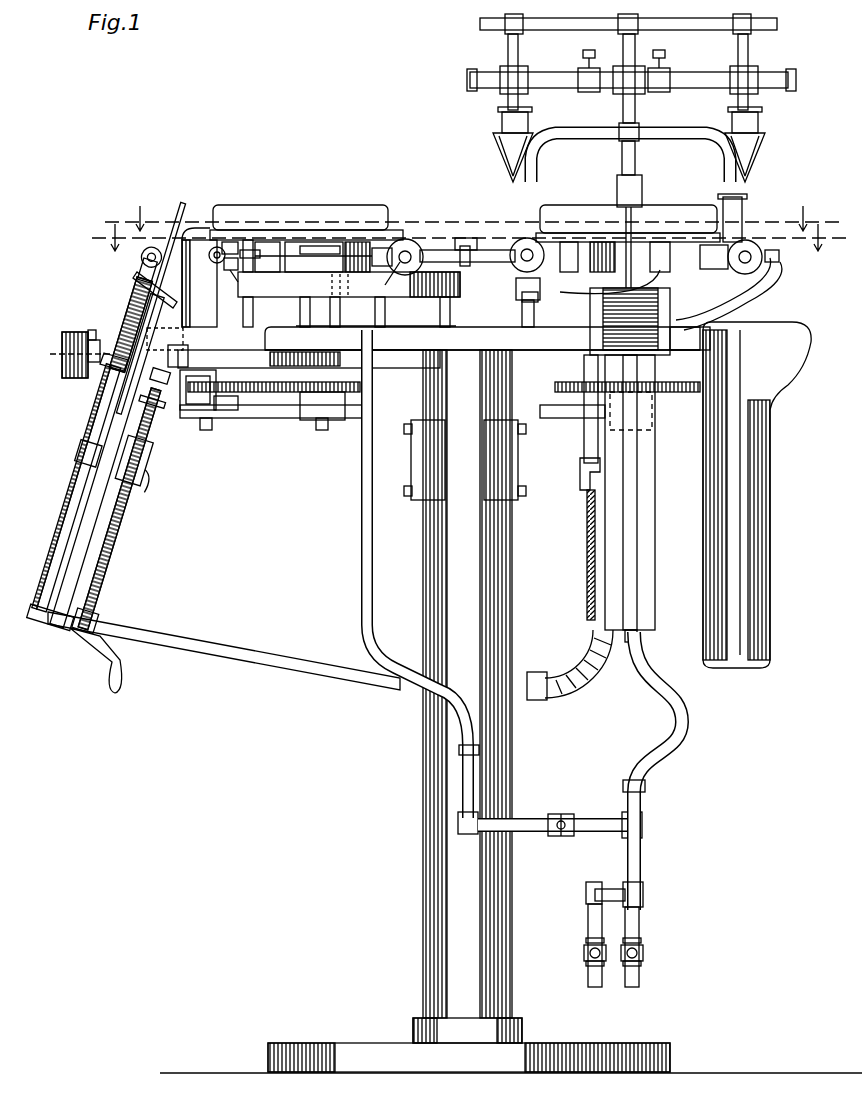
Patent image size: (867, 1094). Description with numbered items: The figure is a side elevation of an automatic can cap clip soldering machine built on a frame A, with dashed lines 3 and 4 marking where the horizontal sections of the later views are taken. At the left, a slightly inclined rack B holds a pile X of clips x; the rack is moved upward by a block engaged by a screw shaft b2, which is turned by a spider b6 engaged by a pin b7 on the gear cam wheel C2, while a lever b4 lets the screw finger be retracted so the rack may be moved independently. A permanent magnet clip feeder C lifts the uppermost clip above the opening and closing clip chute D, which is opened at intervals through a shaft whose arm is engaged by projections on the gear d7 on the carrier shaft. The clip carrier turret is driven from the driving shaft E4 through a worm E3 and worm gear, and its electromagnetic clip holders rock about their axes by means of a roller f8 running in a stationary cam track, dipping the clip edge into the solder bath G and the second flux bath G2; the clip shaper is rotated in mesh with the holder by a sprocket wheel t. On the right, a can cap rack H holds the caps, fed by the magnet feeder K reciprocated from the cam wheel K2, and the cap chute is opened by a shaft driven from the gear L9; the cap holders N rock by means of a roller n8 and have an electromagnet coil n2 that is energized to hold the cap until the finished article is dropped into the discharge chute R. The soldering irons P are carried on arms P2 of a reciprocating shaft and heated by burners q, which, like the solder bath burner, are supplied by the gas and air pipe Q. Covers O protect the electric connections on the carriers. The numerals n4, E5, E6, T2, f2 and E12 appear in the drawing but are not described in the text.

The frame A is at (500, 396).
The arms P2 is at (700, 127).
The burners q is at (502, 120).
The soldering irons P is at (498, 160).
The block n4 is at (622, 190).
The housing cover E5 is at (300, 235).
The worm E3 is at (272, 240).
The block E6 is at (320, 250).
The cover O is at (250, 248).
The roller T2 is at (222, 245).
The pawl f2 is at (236, 242).
The anti-friction roller f8 is at (240, 284).
The section line 3- 3 is at (472, 219).
The section line 4- 4 is at (464, 239).
The molten solder bath G is at (353, 286).
The second acid or flux bath G2 is at (462, 285).
The clip delivery device D is at (180, 240).
The clip holders F is at (443, 250).
The cap holders N is at (466, 240).
The coil n2 is at (700, 250).
The anti-friction roller n8 is at (780, 262).
The can cap feeder K is at (633, 212).
The can cap rack H is at (645, 362).
The cam wheel K2 is at (652, 410).
The gear L9 is at (656, 440).
The gear d7 is at (342, 412).
The discharge chute R is at (772, 445).
The spring E12 is at (335, 362).
The sprocket wheel t is at (262, 396).
The gear cam wheel C2 is at (225, 410).
The driving shaft E4 is at (62, 352).
The rack B is at (125, 360).
The clip feeder C is at (153, 246).
The clips x is at (140, 290).
The pile or stack of clips X is at (118, 326).
The screw shaft b2 is at (118, 520).
The lever b4 is at (160, 480).
The spider b6 is at (158, 378).
The pin b7 is at (158, 404).
The gas and air supply pipe Q is at (594, 990).